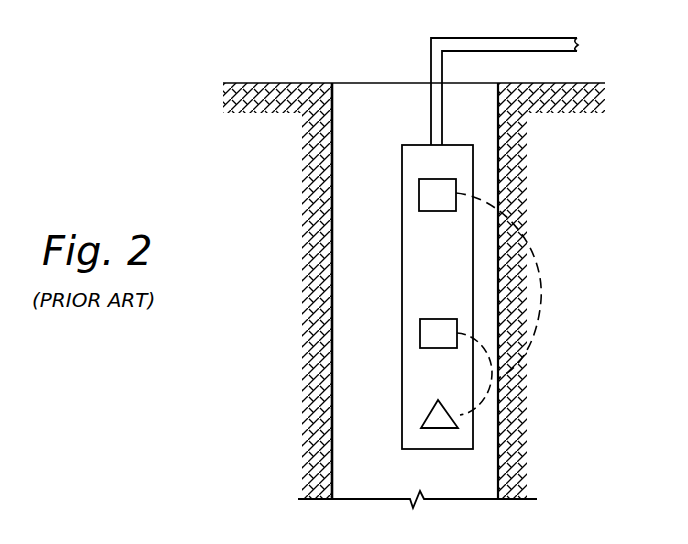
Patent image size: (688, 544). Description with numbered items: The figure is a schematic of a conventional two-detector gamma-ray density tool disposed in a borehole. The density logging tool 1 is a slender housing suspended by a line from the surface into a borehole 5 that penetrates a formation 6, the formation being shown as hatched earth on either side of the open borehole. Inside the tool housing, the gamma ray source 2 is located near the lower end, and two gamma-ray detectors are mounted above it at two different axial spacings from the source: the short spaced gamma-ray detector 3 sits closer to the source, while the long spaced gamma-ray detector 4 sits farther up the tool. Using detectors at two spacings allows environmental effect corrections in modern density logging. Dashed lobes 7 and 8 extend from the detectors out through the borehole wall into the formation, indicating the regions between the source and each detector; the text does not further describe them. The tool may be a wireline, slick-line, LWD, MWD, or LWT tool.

The density logging tool 1 is at (402, 286).
The gamma ray source 2 is at (430, 413).
The short spaced gamma-ray detector 3 is at (420, 335).
The long spaced gamma-ray detector 4 is at (419, 193).
The borehole 5 is at (334, 236).
The formation 6 is at (574, 172).
The investigation region (lobe) 7 is at (491, 380).
The investigation region (lobe) 8 is at (543, 303).